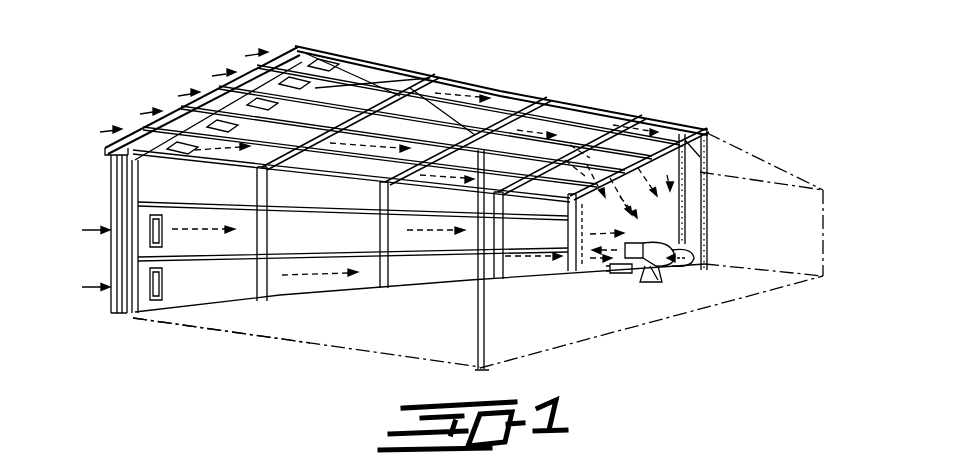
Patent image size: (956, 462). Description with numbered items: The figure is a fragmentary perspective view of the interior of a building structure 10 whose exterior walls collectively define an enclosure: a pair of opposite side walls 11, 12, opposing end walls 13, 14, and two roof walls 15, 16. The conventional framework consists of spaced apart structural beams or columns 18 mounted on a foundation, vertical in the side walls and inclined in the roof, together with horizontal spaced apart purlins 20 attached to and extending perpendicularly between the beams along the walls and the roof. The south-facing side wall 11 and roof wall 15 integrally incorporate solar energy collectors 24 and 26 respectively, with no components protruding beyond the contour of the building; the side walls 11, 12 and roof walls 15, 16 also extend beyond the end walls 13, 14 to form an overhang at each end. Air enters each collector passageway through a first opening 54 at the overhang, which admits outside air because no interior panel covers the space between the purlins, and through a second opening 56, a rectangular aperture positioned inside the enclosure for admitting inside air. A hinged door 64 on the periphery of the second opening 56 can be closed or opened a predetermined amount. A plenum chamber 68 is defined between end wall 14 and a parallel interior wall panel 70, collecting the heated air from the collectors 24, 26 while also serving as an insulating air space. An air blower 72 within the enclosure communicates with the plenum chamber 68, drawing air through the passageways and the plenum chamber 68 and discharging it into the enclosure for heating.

The building structure 10 is at (545, 48).
The side wall 11 is at (205, 325).
The side wall 12 is at (607, 343).
The end wall 13 is at (300, 350).
The end wall 14 is at (752, 282).
The roof wall 15 is at (477, 74).
The roof wall 16 is at (760, 160).
The structural beams or columns 18 is at (139, 316).
The support members or purlins 20 is at (347, 234).
The side wall solar energy collector 24 is at (215, 252).
The roof wall solar energy collector 26 is at (400, 80).
The first opening 54 is at (247, 76).
The second opening 56 is at (250, 102).
The door 64 is at (163, 224).
The plenum chamber 68 is at (705, 205).
The interior wall panel 70 is at (700, 222).
The air blower 72 is at (660, 282).